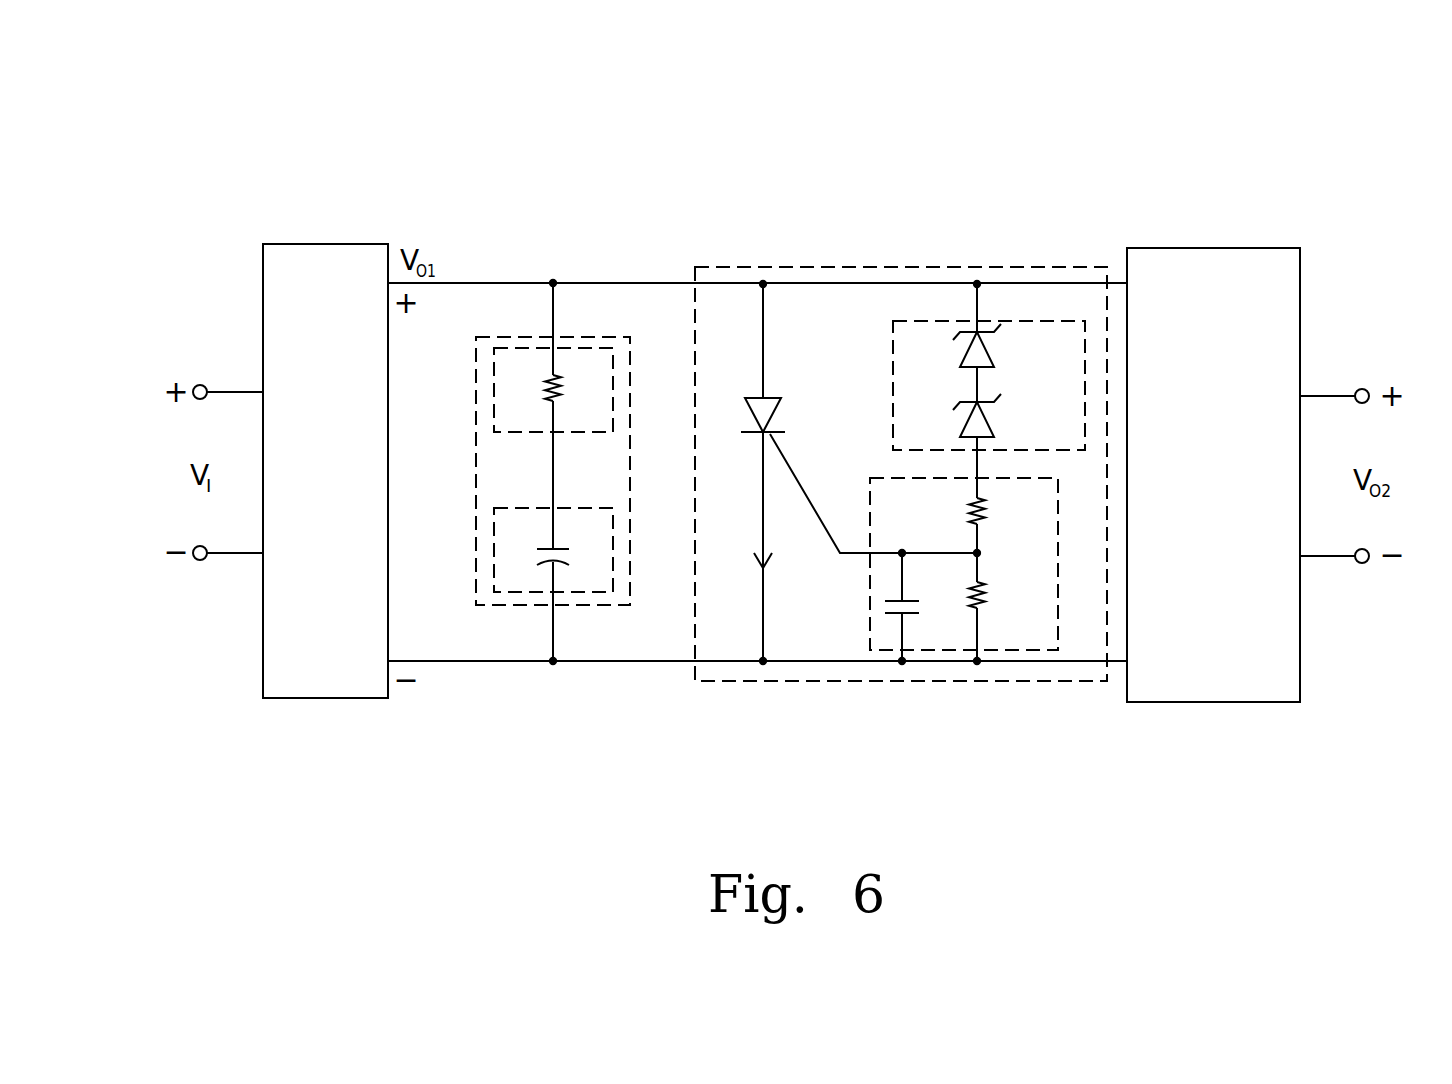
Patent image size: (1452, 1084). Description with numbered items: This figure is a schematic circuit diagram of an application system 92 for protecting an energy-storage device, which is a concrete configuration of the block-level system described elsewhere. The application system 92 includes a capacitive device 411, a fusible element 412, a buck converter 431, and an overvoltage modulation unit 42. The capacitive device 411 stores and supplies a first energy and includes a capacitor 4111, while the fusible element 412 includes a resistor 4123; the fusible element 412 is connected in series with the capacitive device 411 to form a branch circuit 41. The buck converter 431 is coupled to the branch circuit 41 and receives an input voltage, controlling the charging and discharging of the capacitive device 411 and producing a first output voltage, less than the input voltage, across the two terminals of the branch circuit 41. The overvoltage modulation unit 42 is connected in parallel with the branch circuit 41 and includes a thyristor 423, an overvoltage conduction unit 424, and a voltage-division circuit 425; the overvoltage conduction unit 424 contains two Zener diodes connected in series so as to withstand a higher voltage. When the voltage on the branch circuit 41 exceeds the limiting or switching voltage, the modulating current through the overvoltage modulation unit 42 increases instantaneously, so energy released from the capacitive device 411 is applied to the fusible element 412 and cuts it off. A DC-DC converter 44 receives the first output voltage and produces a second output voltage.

The application system 92 is at (1019, 127).
The buck converter 431 is at (320, 244).
The DC-DC converter 44 is at (1197, 248).
The branch circuit 41 is at (501, 337).
The fusible element 412 is at (586, 348).
The resistor 4123 is at (540, 388).
The capacitive device 411 is at (595, 592).
The capacitor 4111 is at (538, 556).
The overvoltage modulation unit 42 is at (790, 267).
The thyristor 423 is at (768, 400).
The overvoltage conduction unit 424 is at (930, 321).
The voltage-division circuit 425 is at (870, 594).